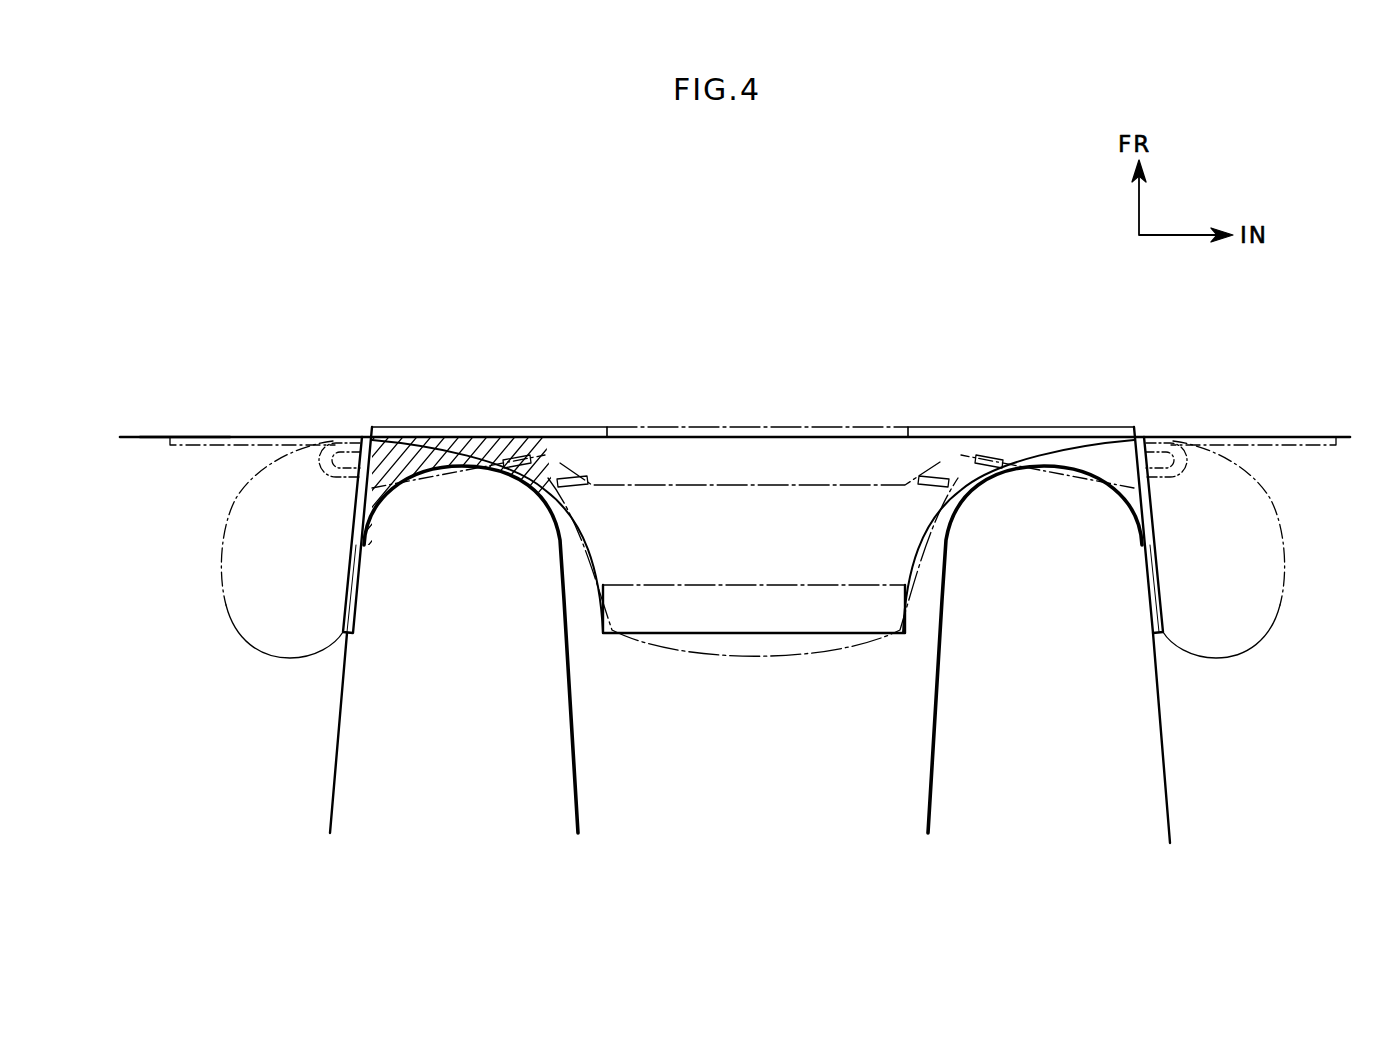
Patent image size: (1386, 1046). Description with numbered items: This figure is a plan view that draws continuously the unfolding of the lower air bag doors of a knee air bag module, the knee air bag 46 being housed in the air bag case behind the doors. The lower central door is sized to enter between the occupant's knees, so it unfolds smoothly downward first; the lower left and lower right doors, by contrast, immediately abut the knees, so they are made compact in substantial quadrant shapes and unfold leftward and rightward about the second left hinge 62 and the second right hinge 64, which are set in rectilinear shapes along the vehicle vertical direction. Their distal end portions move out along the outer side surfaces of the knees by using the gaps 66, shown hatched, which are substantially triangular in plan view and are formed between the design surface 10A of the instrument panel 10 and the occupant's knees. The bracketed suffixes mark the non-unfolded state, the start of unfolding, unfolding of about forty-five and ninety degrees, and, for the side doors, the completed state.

The instrument panel 10 is at (138, 437).
The design surface 10A is at (157, 440).
The knee air bag 46 is at (232, 640).
The second left hinge 62 is at (365, 437).
The second right hinge 64 is at (1135, 437).
The gaps 66 is at (378, 450).